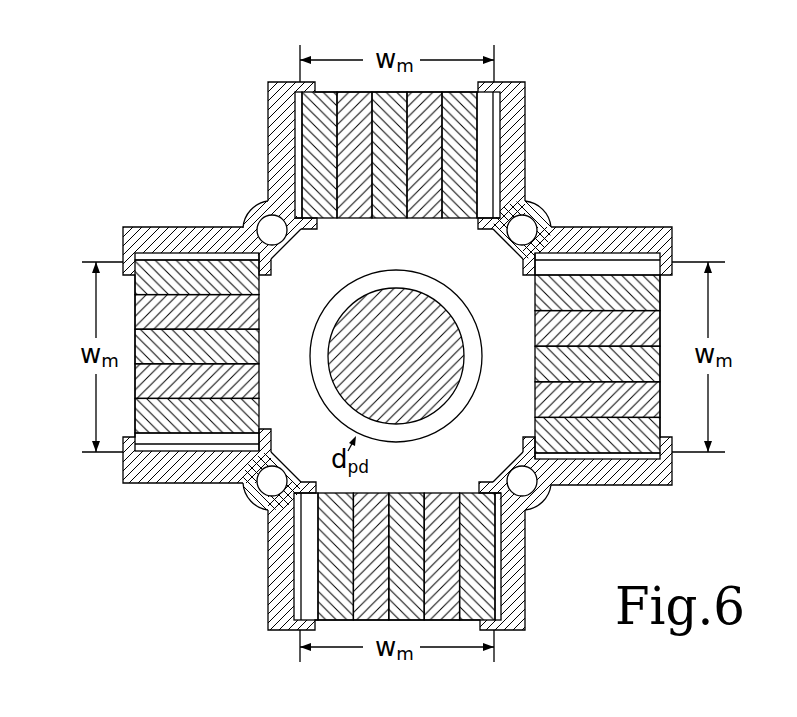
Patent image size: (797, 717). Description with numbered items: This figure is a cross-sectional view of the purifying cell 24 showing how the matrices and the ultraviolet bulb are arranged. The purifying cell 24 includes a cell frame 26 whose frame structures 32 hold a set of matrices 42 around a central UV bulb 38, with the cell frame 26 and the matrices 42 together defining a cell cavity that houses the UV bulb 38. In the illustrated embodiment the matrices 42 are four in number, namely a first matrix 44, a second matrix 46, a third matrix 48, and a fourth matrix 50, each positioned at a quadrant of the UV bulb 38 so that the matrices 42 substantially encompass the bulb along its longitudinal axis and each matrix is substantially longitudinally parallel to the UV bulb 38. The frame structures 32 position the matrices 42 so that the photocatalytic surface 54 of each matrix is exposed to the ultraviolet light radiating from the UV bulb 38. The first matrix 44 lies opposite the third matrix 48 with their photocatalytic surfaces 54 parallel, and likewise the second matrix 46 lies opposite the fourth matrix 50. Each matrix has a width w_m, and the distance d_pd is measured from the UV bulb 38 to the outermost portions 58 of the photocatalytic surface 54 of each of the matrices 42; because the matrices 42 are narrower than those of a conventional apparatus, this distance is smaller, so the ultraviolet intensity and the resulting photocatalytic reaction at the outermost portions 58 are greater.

The purifying cell 24 is at (398, 355).
The cell frame 26 is at (397, 356).
The frame structures 32 is at (282, 189).
The UV bulb 38 is at (438, 352).
The matrices 42 is at (398, 355).
The first matrix 44 is at (655, 328).
The second matrix 46 is at (440, 604).
The third matrix 48 is at (133, 385).
The fourth matrix 50 is at (357, 108).
The photocatalytic surface 54 is at (419, 219).
The outermost portions 58 is at (270, 276).